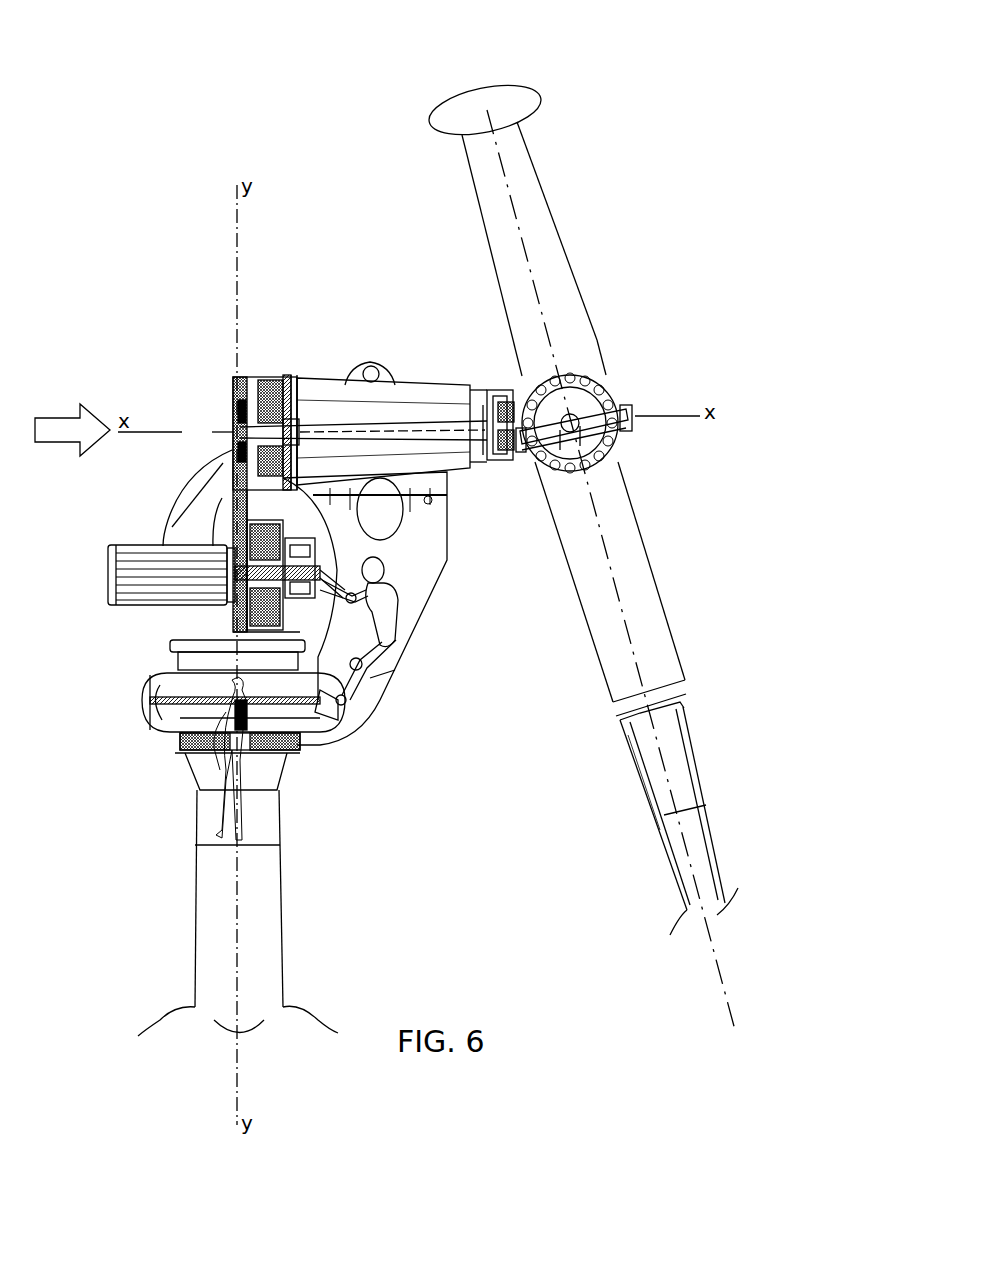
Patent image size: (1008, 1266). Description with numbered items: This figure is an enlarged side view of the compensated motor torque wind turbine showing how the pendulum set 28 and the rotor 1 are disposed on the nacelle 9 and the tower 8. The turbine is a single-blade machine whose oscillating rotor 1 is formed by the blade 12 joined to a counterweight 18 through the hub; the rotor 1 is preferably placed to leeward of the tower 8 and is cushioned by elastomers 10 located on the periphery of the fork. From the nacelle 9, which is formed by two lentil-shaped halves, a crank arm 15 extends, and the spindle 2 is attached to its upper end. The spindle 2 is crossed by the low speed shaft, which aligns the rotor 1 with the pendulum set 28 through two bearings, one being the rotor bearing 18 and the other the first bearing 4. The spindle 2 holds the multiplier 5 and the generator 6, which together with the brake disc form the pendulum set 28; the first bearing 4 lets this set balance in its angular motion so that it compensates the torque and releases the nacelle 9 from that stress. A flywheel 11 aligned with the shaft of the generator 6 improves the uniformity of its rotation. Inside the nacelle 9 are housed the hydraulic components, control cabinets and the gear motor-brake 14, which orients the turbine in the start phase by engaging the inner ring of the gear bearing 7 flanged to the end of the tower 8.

The rotor 1 is at (600, 387).
The spindle 2 is at (377, 405).
The first bearing 4 is at (287, 377).
The multiplier 5 is at (250, 390).
The generator 6 is at (147, 575).
The gear bearing 7 is at (295, 757).
The tower 8 is at (215, 890).
The nacelle 9 is at (165, 715).
The elastomers 10 is at (625, 455).
The flywheel 11 is at (250, 613).
The blade 12 is at (677, 840).
The gear motor-brake 14 is at (185, 757).
The crank arm 15 is at (407, 563).
The counterweight 18 is at (523, 97).
The pendulum set 28 is at (158, 491).